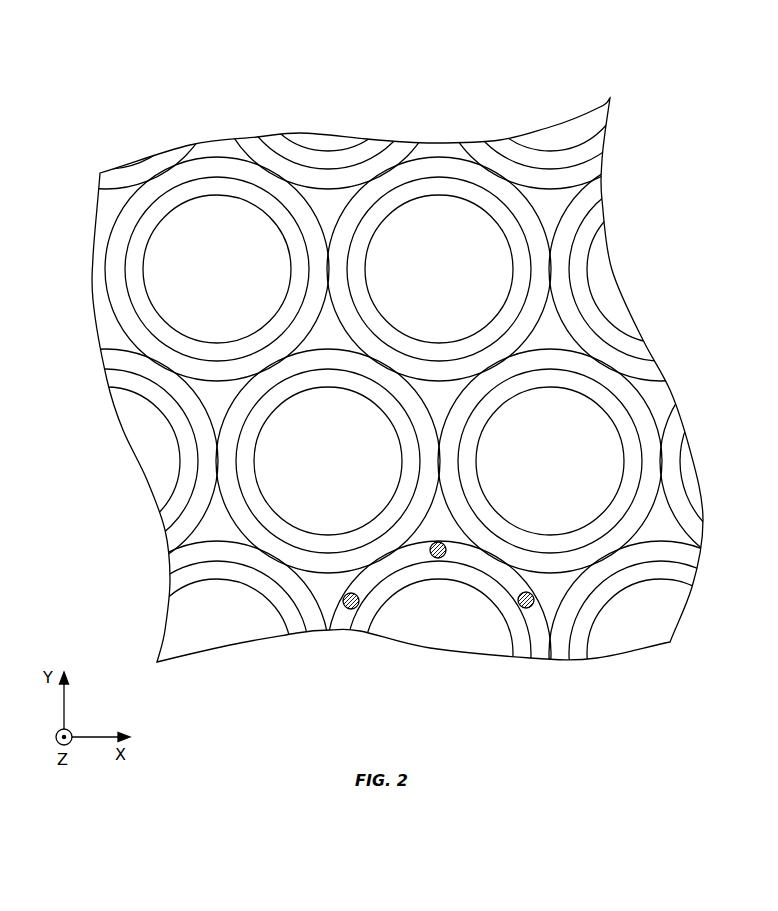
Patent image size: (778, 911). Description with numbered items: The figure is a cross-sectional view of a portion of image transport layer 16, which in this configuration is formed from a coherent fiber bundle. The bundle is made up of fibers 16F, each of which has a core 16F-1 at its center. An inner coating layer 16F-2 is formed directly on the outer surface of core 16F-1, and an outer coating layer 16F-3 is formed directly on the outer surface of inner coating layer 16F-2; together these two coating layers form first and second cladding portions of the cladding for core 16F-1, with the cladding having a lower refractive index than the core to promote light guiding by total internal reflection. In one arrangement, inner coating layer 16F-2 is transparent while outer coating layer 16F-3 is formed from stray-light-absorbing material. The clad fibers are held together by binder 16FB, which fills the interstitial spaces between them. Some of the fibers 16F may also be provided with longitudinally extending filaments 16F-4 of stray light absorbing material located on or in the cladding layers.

The image transport layer 16 is at (428, 78).
The fibers 16F is at (112, 323).
The core 16F-1 is at (240, 218).
The inner coating layer 16F-2 is at (214, 187).
The outer coating layer 16F-3 is at (157, 190).
The binder 16FB is at (218, 395).
The longitudinally extending filaments 16F-4 is at (518, 603).